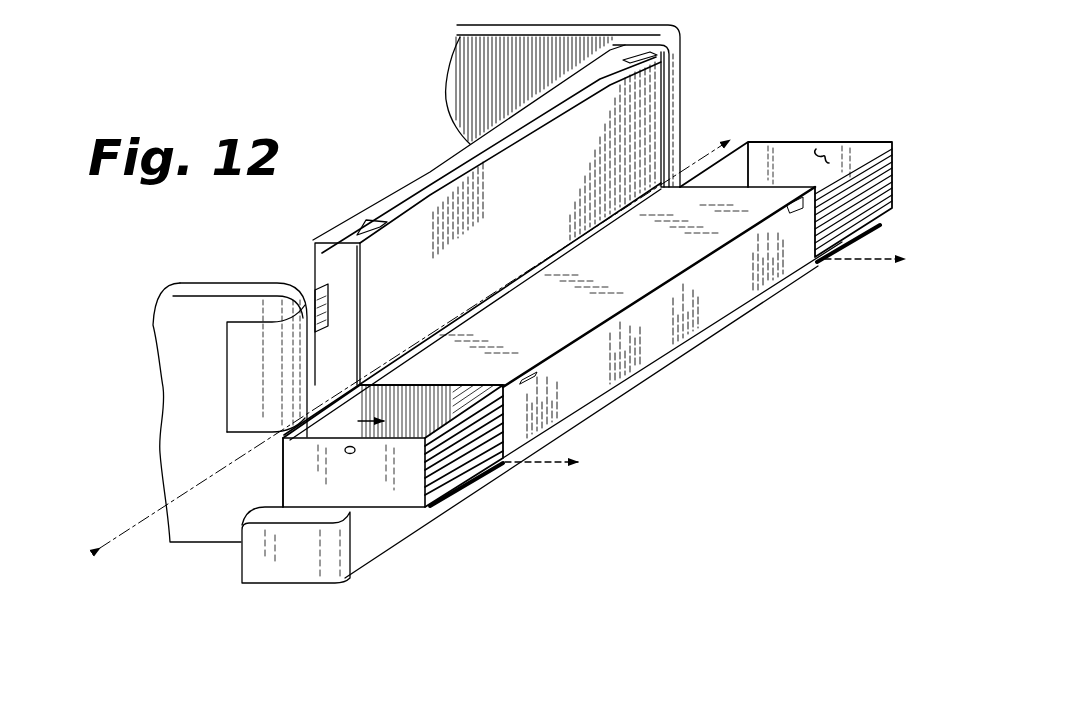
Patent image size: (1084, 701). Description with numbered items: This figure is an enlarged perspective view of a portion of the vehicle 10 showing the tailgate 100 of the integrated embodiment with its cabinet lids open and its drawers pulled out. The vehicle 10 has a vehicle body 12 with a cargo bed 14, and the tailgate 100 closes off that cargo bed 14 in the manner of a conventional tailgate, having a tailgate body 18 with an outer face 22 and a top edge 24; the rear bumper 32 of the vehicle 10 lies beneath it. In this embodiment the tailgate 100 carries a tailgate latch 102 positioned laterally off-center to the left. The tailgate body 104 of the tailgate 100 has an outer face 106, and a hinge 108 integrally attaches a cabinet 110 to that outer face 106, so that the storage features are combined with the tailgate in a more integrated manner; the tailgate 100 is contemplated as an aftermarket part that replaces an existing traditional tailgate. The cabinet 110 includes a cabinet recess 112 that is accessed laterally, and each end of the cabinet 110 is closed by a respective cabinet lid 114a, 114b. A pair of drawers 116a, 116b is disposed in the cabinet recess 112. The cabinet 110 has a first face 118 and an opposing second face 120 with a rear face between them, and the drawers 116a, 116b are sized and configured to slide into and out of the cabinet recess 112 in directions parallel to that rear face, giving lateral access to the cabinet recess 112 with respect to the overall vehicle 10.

The vehicle 10 is at (484, 25).
The vehicle body 12 is at (537, 25).
The cargo bed 14 is at (418, 80).
The tailgate body 18 is at (327, 358).
The outer face 22 is at (327, 389).
The top edge 24 is at (407, 197).
The rear bumper 32 is at (266, 562).
The tailgate 100 is at (453, 165).
The tailgate latch 102 is at (322, 297).
The tailgate body 104 is at (645, 100).
The outer face 106 is at (650, 130).
The hinge 108 is at (535, 268).
The cabinet 110 is at (727, 300).
The cabinet recess 112 is at (280, 431).
The cabinet lid 114a is at (480, 478).
The cabinet lid 114b is at (872, 228).
The drawer 116a is at (413, 486).
The drawer 116b is at (795, 148).
The first face 118 is at (661, 259).
The second face 120 is at (668, 368).